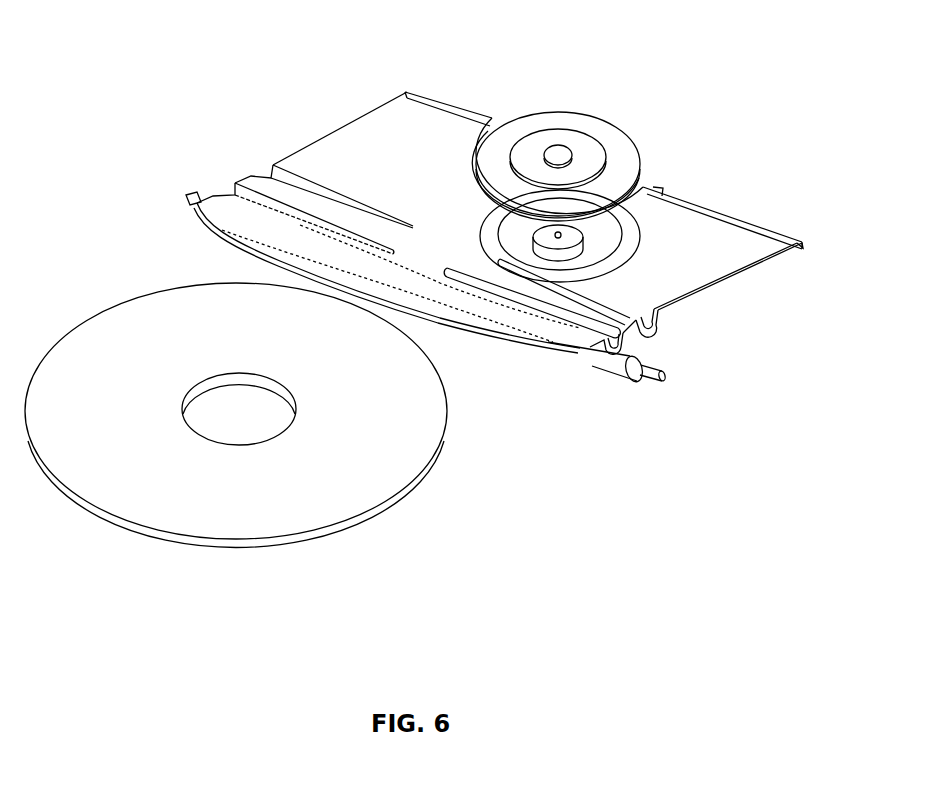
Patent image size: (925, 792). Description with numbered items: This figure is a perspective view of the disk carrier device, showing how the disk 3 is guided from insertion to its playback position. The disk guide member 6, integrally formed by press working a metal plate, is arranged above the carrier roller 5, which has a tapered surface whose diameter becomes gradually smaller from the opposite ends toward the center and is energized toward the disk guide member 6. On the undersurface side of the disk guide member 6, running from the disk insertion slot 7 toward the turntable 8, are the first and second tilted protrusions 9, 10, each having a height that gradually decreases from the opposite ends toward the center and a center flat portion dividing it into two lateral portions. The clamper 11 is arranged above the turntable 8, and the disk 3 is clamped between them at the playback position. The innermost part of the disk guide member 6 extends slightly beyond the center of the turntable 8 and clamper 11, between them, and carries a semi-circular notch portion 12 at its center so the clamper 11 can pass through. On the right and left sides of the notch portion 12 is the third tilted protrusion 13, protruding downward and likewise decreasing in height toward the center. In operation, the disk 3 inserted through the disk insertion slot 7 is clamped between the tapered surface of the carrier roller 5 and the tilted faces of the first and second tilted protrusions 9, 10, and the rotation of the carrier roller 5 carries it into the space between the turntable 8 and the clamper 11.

The disk 3 is at (400, 503).
The carrier roller 5 is at (593, 363).
The disk guide member 6 is at (700, 239).
The disk insertion slot 7 is at (460, 340).
The turntable 8 is at (625, 250).
The first tilted protrusion 9 is at (623, 342).
The second tilted protrusion 10 is at (662, 325).
The clamper 11 is at (608, 120).
The notch portion 12 is at (476, 186).
The third tilted protrusion 13 is at (457, 100).